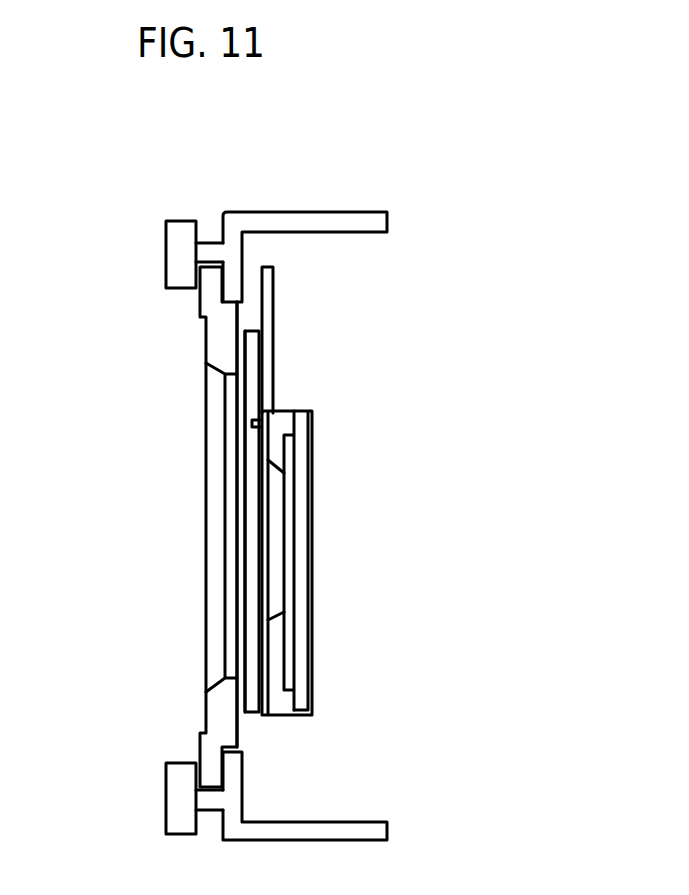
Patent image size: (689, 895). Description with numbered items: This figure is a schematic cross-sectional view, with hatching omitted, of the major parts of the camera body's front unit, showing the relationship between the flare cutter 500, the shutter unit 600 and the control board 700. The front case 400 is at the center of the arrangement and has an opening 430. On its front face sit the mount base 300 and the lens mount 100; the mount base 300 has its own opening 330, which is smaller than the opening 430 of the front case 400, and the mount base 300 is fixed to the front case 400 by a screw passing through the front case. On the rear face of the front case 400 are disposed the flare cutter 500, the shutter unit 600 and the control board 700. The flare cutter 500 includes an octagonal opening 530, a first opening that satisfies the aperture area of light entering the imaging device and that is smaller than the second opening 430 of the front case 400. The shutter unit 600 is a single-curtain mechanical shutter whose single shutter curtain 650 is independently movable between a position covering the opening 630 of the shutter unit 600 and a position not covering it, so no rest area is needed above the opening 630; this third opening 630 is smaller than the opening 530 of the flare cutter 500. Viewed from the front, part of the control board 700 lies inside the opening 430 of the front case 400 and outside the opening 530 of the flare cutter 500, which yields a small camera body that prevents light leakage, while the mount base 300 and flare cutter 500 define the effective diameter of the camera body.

The lens mount 100 is at (180, 245).
The mount base 300 is at (220, 338).
The opening 330 is at (212, 495).
The front case 400 is at (260, 222).
The opening 430 is at (240, 320).
The flare cutter 500 is at (250, 355).
The opening 530 is at (254, 570).
The shutter unit 600 is at (313, 427).
The opening 630 is at (280, 588).
The shutter curtain 650 is at (291, 667).
The control board 700 is at (267, 303).